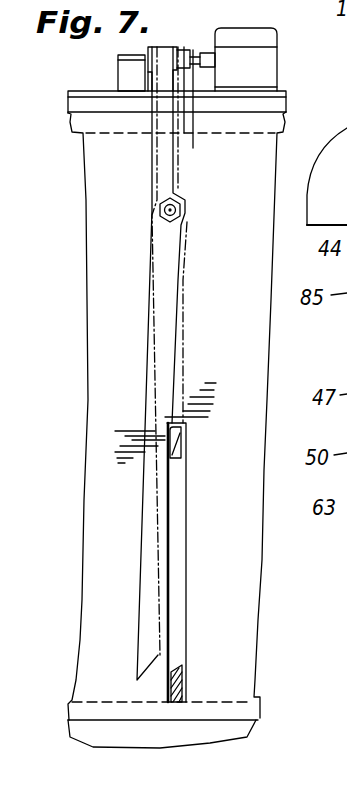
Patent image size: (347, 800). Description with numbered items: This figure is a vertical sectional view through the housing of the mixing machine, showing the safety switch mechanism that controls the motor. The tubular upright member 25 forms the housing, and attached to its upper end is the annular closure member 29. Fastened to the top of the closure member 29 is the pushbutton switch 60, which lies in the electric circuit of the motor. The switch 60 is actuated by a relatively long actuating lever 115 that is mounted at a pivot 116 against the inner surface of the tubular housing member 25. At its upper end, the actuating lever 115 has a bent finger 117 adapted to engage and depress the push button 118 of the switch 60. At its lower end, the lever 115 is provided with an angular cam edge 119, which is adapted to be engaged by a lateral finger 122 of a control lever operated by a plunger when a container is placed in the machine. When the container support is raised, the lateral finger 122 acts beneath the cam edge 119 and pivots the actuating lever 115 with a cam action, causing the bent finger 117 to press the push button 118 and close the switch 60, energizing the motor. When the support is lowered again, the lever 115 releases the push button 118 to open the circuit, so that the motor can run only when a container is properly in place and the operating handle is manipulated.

The tubular upright member 25 is at (100, 403).
The annular closure member 29 is at (281, 104).
The pushbutton switch 60 is at (266, 71).
The actuating lever 115 is at (165, 3).
The pivot 116 is at (188, 208).
The bent finger 117 is at (182, 46).
The push button 118 is at (193, 148).
The angular cam edge 119 is at (183, 666).
The lateral finger 122 is at (184, 452).